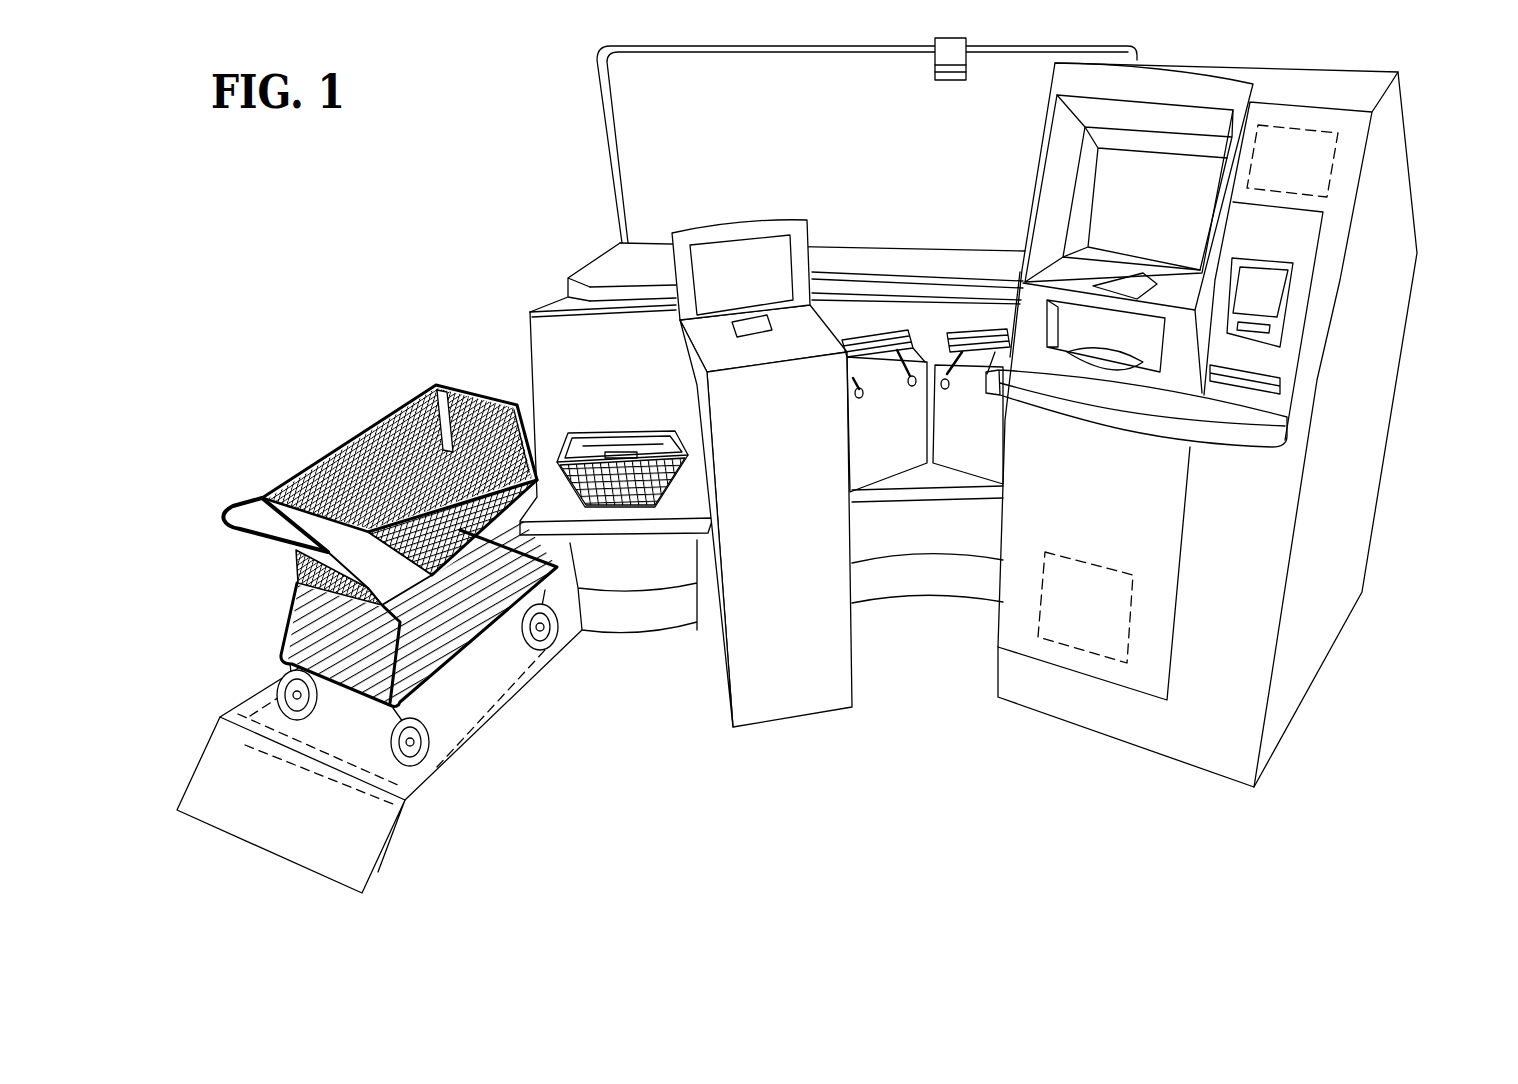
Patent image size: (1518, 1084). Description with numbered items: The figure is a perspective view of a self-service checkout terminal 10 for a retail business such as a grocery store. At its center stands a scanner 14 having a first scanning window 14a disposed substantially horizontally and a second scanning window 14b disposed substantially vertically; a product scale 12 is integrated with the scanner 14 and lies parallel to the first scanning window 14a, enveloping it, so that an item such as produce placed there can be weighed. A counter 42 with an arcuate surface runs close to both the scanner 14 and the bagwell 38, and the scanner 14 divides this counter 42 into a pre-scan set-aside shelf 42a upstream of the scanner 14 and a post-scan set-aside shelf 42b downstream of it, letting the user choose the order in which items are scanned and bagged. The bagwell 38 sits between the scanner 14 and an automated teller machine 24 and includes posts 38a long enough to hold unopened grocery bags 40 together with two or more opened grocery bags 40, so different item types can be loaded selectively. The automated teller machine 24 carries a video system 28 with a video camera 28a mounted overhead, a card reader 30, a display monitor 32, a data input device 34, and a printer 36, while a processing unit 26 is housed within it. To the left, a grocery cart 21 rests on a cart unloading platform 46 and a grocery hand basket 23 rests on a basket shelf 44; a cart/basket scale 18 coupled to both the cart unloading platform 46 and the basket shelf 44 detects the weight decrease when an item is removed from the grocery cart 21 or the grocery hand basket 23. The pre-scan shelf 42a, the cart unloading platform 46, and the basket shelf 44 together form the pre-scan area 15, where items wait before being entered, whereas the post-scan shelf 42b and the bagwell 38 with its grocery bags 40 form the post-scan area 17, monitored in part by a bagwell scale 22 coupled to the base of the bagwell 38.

The self-service checkout terminal 10 is at (468, 178).
The product scale 12 is at (742, 443).
The scanner 14 is at (737, 239).
The first scanning window 14a is at (752, 320).
The second scanning window 14b is at (723, 255).
The pre-scan area 15 is at (448, 333).
The post-scan area 17 is at (925, 237).
The cart/basket scale 18 is at (625, 540).
The grocery cart 21 is at (356, 432).
The bagwell scale 22 is at (1000, 494).
The grocery hand basket 23 is at (623, 435).
The automated teller machine (ATM) 24 is at (1233, 425).
The processing unit 26 is at (1095, 580).
The video system 28 is at (1310, 160).
The video camera 28a is at (951, 55).
The card reader 30 is at (1270, 328).
The display monitor 32 is at (1115, 182).
The data input device 34 is at (1125, 283).
The printer 36 is at (1282, 382).
The bagwell 38 is at (926, 440).
The posts 38a is at (862, 400).
The grocery bags 40 is at (860, 457).
The counter 42 is at (597, 305).
The pre-scan set-aside shelf 42a is at (563, 303).
The post-scan set-aside shelf 42b is at (876, 295).
The basket shelf 44 is at (685, 511).
The cart unloading platform 46 is at (470, 686).